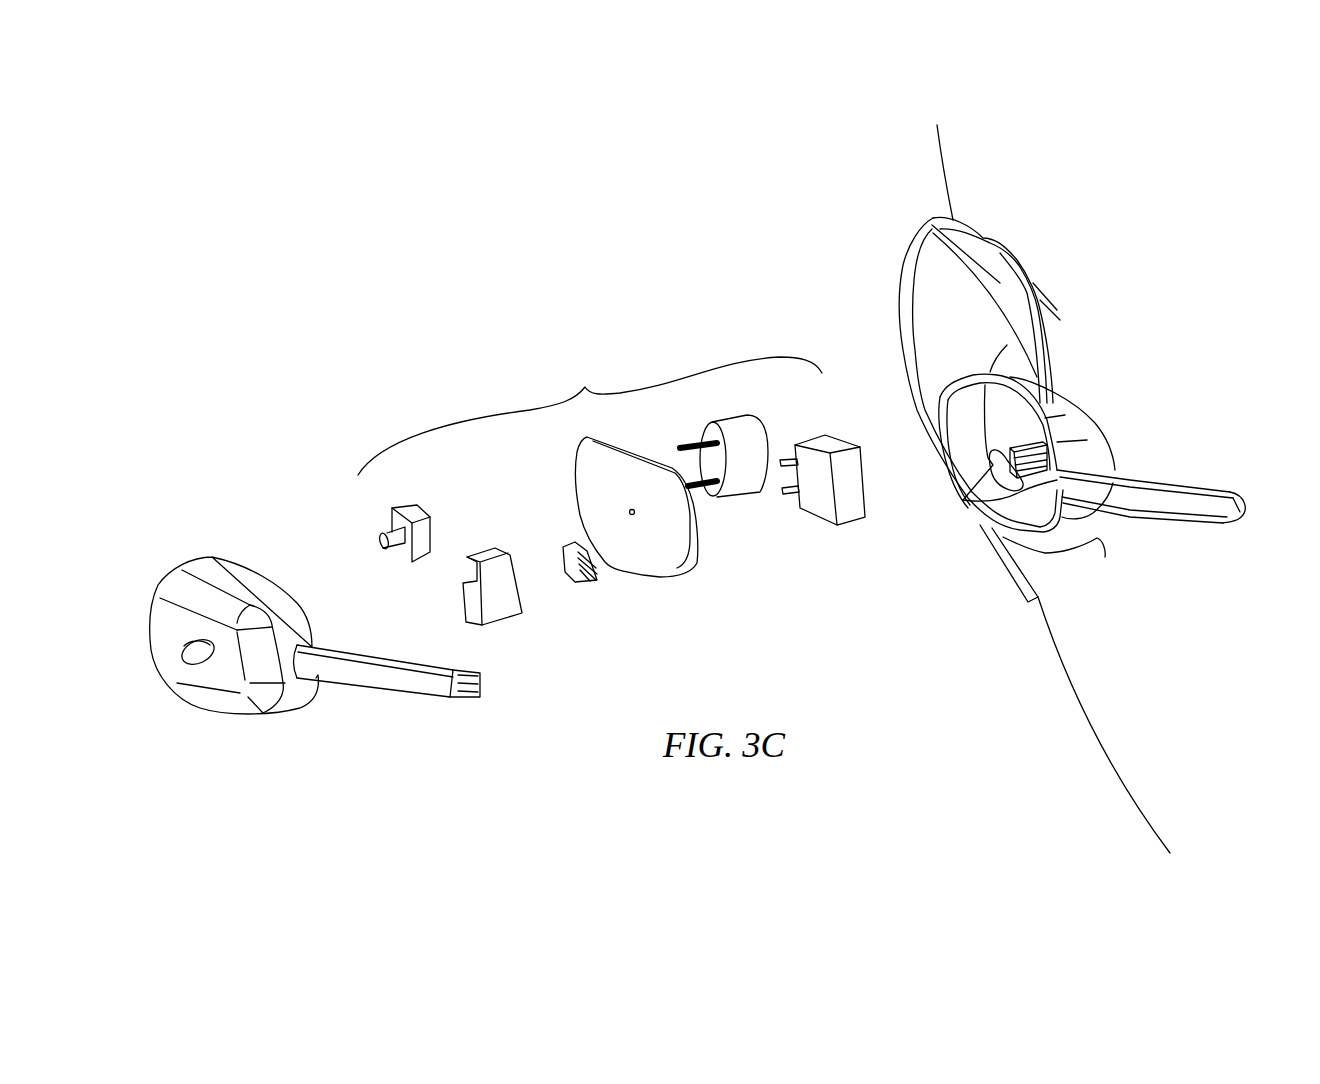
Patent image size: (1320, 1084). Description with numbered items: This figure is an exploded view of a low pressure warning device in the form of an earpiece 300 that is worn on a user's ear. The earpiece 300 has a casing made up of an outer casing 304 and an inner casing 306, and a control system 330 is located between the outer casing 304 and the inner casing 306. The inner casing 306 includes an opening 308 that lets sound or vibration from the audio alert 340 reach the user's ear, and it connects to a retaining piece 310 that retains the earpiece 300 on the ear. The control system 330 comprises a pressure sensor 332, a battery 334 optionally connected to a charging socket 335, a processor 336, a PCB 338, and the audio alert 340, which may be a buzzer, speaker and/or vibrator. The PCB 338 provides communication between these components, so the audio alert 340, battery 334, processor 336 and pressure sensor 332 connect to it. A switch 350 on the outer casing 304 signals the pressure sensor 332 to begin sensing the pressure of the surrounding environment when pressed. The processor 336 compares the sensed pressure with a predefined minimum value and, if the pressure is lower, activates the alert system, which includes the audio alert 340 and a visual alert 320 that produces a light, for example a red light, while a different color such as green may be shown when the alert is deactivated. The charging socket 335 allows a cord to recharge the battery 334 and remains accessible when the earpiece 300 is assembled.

The earpiece 300 is at (627, 685).
The outer casing 304 is at (300, 715).
The inner casing 306 is at (943, 481).
The opening 308 is at (960, 499).
The retaining piece 310 is at (995, 565).
The visual alert 320 is at (1250, 514).
The control system 330 is at (590, 416).
The pressure sensor 332 is at (420, 508).
The battery 334 is at (818, 517).
The charging socket 335 is at (500, 612).
The processor 336 is at (580, 583).
The PCB 338 is at (675, 570).
The audio alert 340 is at (742, 418).
The switch 350 is at (183, 648).